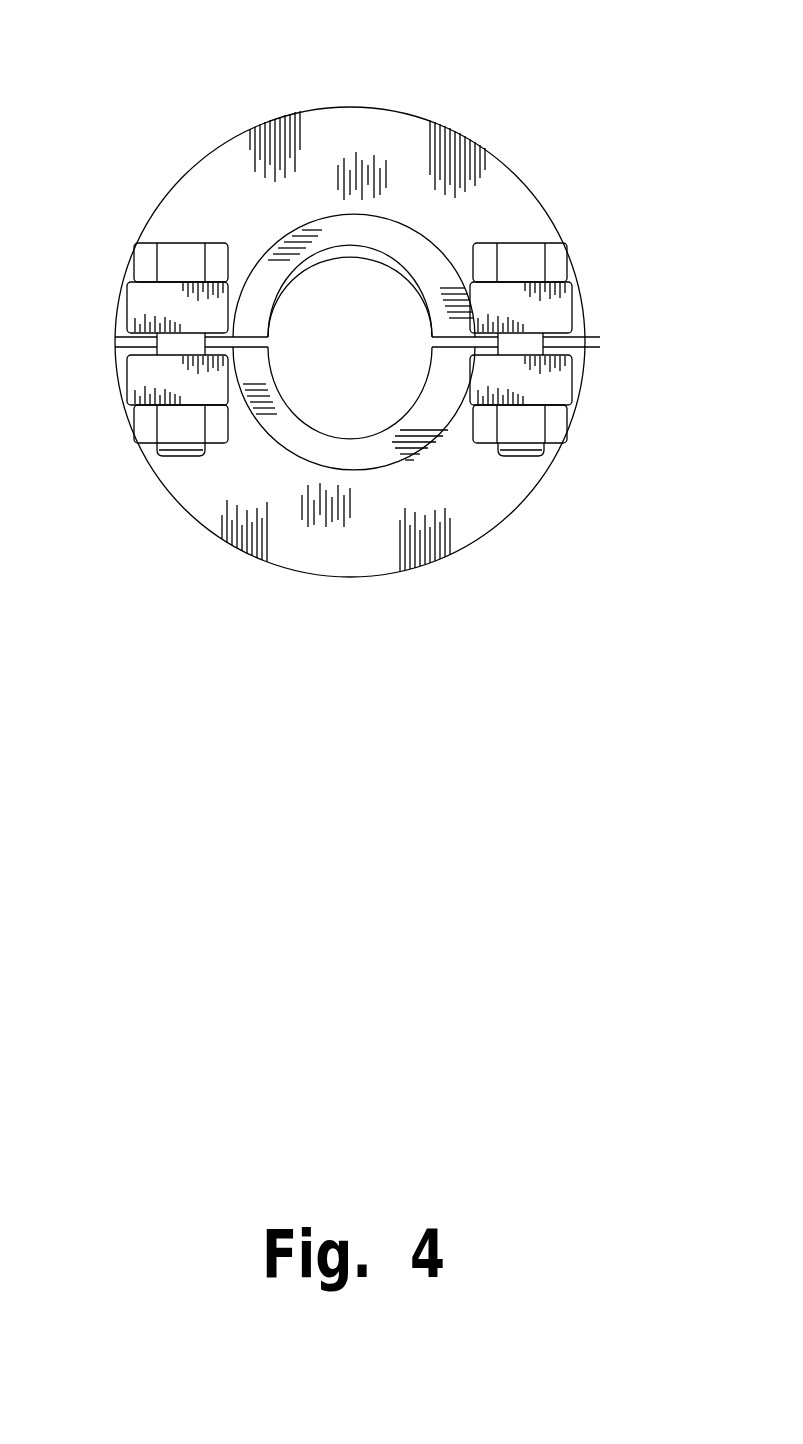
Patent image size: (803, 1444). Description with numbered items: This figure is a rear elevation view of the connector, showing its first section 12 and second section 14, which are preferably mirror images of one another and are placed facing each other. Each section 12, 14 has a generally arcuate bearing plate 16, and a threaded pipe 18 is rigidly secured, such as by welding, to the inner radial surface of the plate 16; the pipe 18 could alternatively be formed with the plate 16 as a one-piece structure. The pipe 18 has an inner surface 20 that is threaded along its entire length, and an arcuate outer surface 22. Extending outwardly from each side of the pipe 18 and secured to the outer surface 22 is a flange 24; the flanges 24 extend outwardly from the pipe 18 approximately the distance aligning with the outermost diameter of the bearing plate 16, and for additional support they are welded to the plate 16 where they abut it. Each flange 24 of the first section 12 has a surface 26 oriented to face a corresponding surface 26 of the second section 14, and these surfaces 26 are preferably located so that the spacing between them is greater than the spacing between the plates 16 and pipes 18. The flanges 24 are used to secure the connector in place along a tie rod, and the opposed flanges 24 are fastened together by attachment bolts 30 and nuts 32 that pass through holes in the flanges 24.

The first section 12 is at (405, 103).
The second section 14 is at (394, 590).
The bearing plate 16 is at (494, 155).
The threaded pipe 18 is at (362, 228).
The inner surface 20 is at (332, 262).
The outer surface 22 is at (278, 243).
The flange 24 is at (135, 293).
The surface 26 is at (130, 337).
The attachment bolt 30 is at (148, 240).
The nut 32 is at (138, 440).